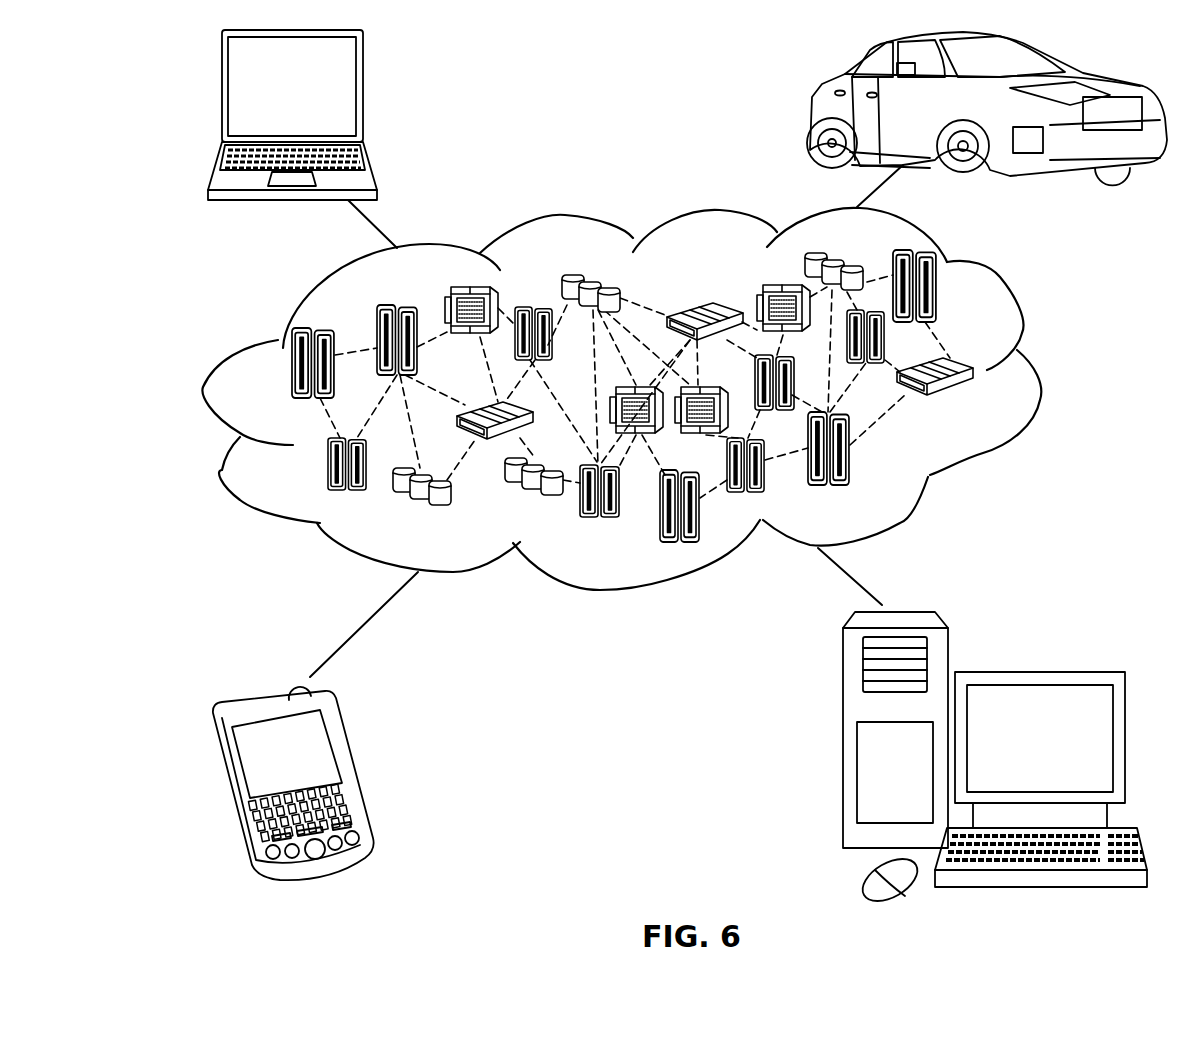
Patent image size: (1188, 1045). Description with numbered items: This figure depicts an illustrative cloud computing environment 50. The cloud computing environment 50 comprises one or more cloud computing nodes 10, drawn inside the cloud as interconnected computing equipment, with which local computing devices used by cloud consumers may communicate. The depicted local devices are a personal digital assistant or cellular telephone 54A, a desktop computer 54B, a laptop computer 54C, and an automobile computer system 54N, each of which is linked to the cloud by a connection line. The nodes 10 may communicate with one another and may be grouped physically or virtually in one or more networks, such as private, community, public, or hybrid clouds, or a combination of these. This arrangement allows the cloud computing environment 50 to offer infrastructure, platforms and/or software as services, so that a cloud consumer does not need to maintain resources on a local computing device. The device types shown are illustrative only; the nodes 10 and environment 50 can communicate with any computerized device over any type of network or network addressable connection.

The cloud computing node 10 is at (977, 405).
The cloud computing environment 50 is at (1040, 375).
The personal digital assistant or cellular telephone 54A is at (352, 768).
The desktop computer 54B is at (1037, 670).
The laptop computer 54C is at (363, 95).
The automobile computer system 54N is at (812, 108).